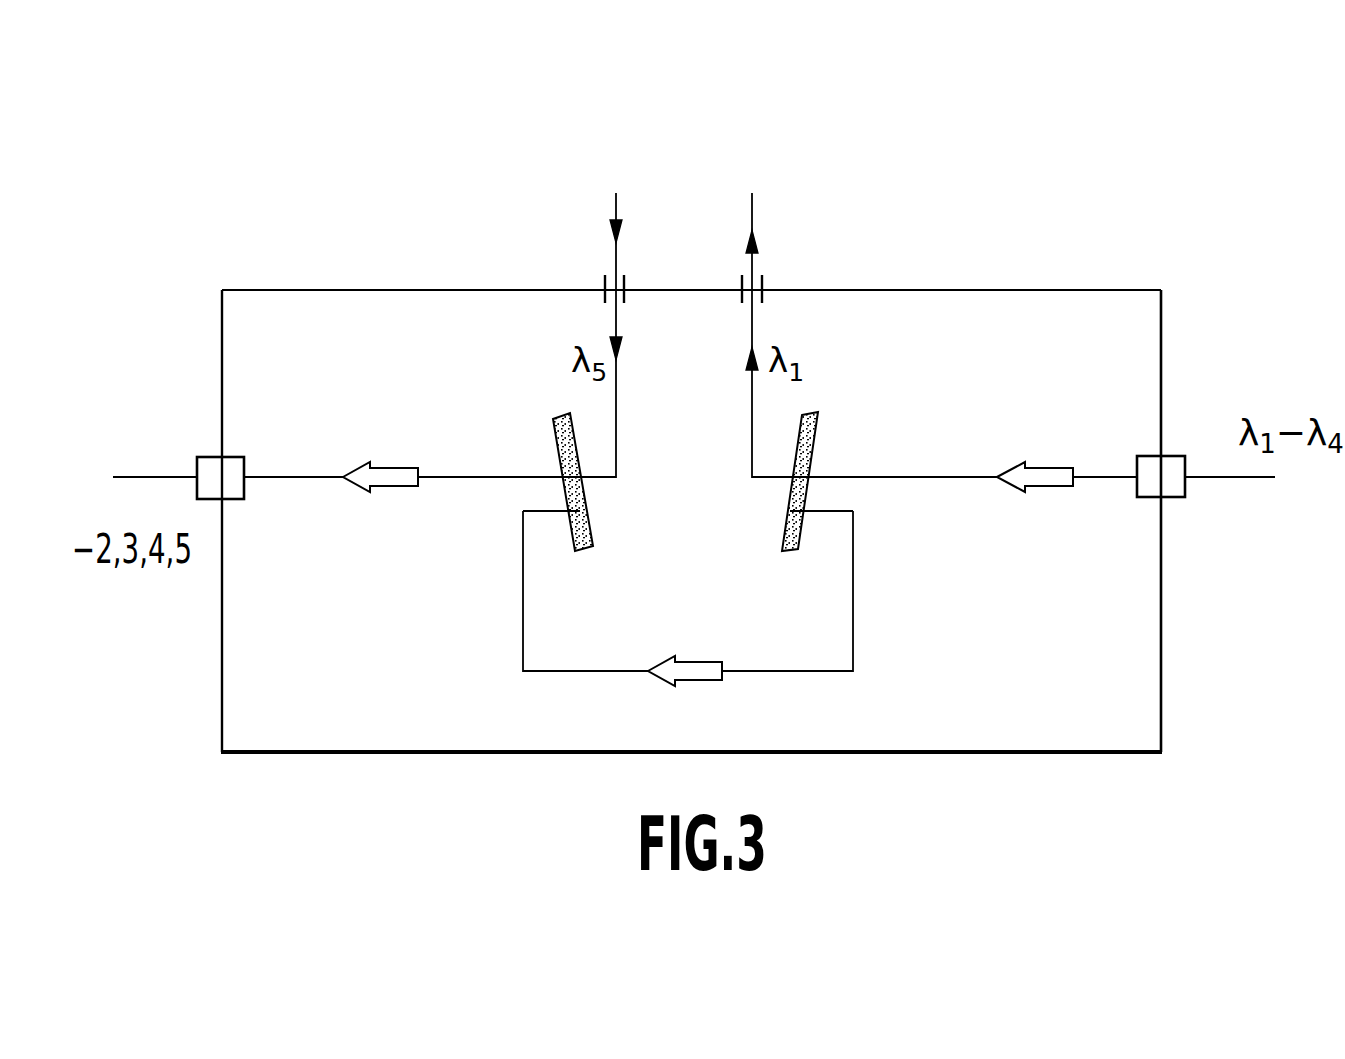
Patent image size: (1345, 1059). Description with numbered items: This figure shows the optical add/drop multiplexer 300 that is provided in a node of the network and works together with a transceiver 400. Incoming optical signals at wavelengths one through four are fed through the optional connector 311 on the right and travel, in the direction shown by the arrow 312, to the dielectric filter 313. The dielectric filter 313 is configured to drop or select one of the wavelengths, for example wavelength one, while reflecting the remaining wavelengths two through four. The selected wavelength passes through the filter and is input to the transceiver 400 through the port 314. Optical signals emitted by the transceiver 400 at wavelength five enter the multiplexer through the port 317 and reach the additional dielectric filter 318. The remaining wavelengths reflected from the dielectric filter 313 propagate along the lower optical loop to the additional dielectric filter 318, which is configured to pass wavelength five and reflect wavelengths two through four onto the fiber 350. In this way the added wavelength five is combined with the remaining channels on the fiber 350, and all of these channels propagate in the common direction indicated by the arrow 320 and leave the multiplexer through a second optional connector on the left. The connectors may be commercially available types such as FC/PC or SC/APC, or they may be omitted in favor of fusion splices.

The optical add/drop multiplexer 300 is at (1162, 321).
The optional connector 311 is at (1180, 497).
The arrow 312 is at (1047, 488).
The dielectric filter 313 is at (820, 420).
The port 314 is at (763, 290).
The port 317 is at (600, 290).
The additional dielectric filter 318 is at (553, 435).
The arrow 320 is at (385, 490).
The fiber 350 is at (477, 478).
The transceiver 400 is at (680, 232).